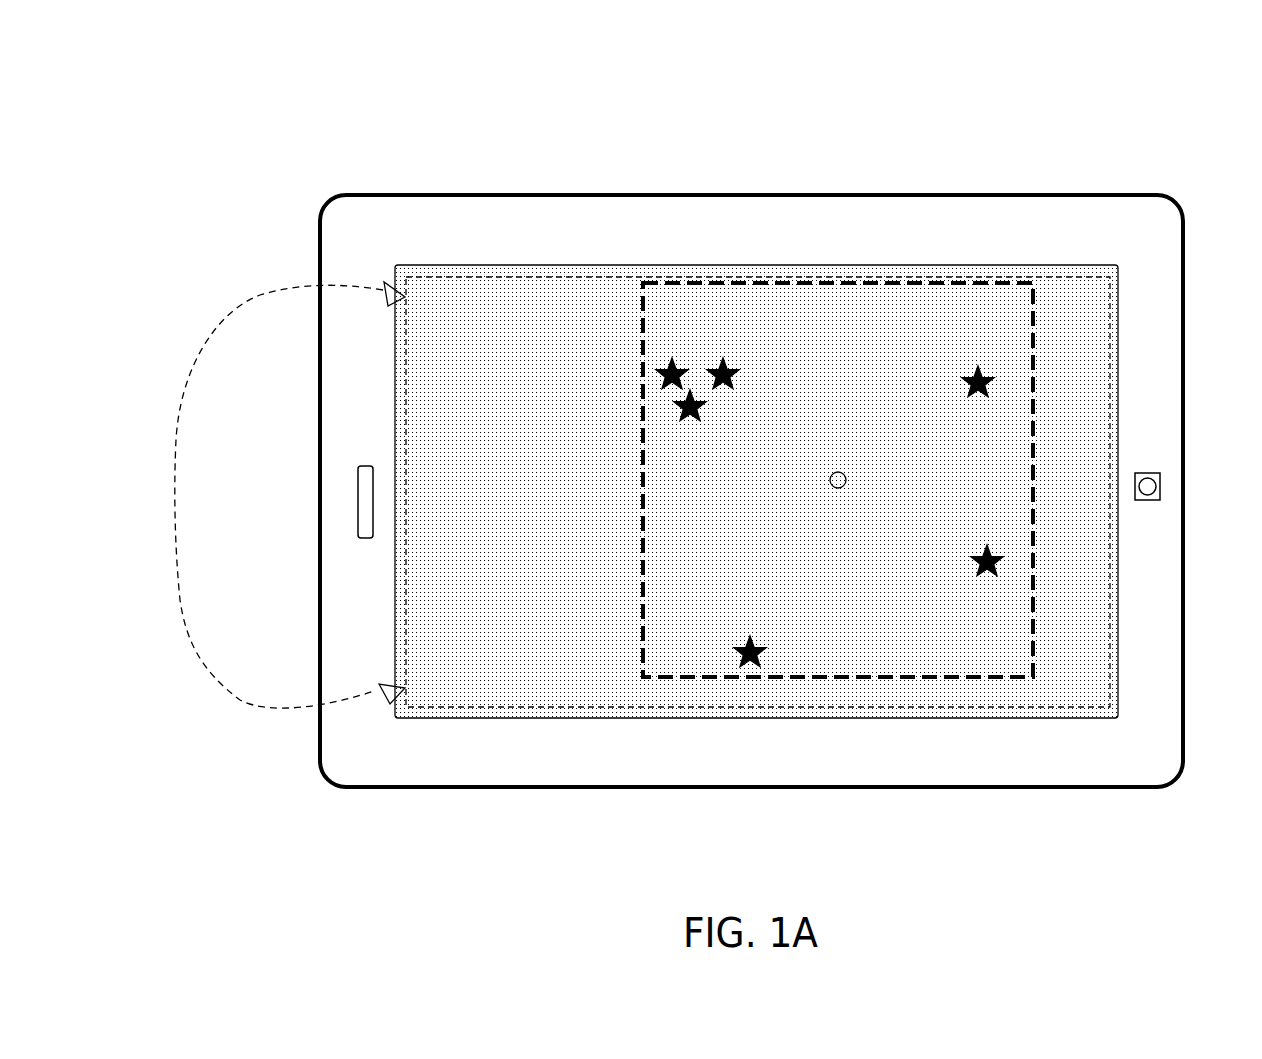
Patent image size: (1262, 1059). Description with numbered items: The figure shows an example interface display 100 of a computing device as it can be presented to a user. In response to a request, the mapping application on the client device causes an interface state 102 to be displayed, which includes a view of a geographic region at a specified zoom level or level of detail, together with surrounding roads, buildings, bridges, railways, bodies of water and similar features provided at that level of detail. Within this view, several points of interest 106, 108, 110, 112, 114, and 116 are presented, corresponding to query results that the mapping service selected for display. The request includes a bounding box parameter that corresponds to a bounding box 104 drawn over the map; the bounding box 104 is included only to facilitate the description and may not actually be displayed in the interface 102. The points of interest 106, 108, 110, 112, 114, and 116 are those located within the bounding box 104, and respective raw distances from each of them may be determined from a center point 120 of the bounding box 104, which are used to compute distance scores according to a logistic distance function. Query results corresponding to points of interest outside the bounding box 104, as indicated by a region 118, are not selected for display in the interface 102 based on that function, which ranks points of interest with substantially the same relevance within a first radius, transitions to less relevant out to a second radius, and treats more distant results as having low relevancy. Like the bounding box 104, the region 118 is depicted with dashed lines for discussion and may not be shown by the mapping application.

The interface display 100 is at (1232, 162).
The interface state 102 is at (950, 263).
The bounding box 104 is at (844, 283).
The point of interest 106 is at (672, 360).
The point of interest 108 is at (723, 360).
The point of interest 110 is at (680, 402).
The point of interest 112 is at (975, 370).
The point of interest 114 is at (760, 665).
The point of interest 116 is at (990, 577).
The region 118 is at (636, 492).
The center point 120 is at (842, 489).